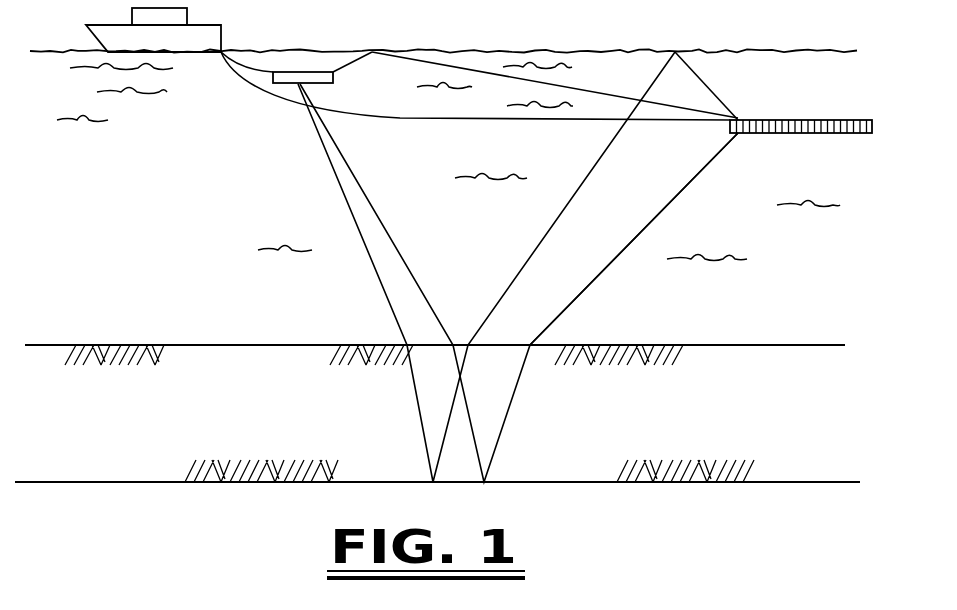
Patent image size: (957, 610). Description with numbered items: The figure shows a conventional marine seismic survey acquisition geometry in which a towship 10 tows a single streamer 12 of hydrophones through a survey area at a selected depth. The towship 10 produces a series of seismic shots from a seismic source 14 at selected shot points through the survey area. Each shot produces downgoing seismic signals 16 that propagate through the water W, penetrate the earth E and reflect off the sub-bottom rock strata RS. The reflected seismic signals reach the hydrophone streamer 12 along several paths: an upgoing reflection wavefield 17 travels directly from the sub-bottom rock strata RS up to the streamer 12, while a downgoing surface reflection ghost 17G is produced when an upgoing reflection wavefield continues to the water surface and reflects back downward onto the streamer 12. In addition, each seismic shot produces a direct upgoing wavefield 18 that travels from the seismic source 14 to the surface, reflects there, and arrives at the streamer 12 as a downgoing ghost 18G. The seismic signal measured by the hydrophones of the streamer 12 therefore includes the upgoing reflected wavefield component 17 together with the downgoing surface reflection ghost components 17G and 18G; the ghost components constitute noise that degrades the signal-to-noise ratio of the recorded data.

The towship 10 is at (219, 34).
The streamer 12 is at (808, 120).
The seismic source 14 is at (313, 72).
The downgoing seismic signals 16 is at (362, 237).
The upgoing reflection wavefield 17 is at (675, 200).
The downgoing surface reflection ghost 17G is at (706, 85).
The direct upgoing wavefield 18 is at (350, 63).
The downgoing ghost 18G is at (570, 88).
The water W is at (211, 240).
The earth E is at (212, 424).
The sub-bottom rock strata RS is at (366, 481).